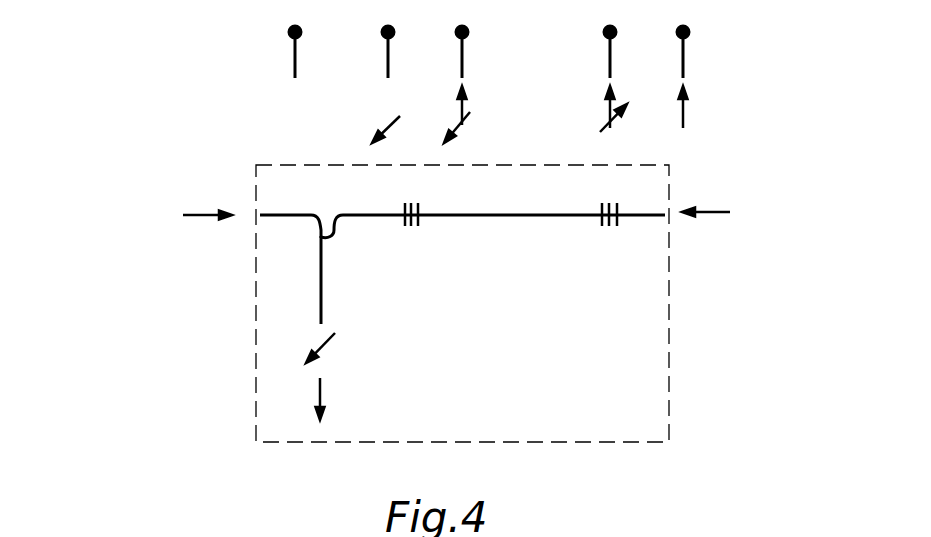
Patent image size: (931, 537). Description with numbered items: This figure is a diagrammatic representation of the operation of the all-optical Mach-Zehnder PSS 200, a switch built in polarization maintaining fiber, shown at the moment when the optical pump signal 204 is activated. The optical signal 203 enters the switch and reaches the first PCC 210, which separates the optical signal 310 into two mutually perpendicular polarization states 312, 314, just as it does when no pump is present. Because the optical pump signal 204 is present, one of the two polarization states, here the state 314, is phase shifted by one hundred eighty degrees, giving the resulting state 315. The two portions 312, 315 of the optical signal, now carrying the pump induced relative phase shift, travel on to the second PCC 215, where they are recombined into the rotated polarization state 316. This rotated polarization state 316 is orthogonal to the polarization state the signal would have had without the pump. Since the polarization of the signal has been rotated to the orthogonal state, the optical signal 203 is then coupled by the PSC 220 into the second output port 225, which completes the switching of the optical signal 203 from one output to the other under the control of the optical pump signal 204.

The Mach-Zehnder PSS 200 is at (672, 362).
The optical signal 203 is at (718, 213).
The optical pump signal 204 is at (203, 214).
The first PCC 210 is at (608, 226).
The second PCC 215 is at (410, 226).
The PSC 220 is at (329, 232).
The second output port 225 is at (322, 288).
The optical signal 310 is at (686, 123).
The polarization state 312 is at (470, 122).
The polarization state 314 is at (618, 112).
The resulting state 315 is at (468, 123).
The rotated polarization state 316 is at (398, 116).